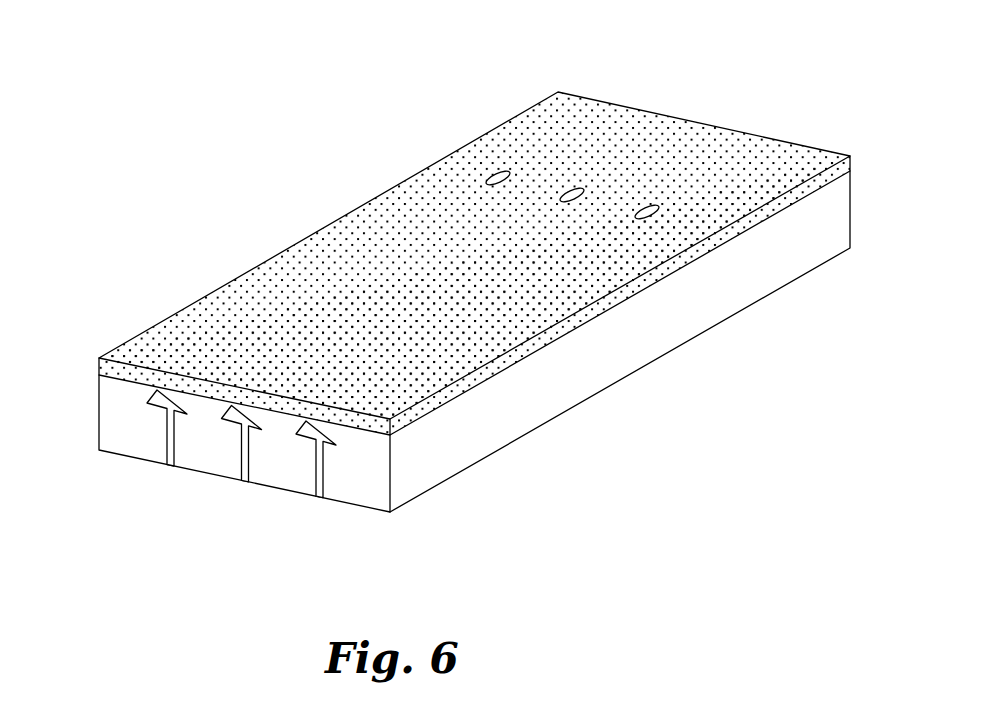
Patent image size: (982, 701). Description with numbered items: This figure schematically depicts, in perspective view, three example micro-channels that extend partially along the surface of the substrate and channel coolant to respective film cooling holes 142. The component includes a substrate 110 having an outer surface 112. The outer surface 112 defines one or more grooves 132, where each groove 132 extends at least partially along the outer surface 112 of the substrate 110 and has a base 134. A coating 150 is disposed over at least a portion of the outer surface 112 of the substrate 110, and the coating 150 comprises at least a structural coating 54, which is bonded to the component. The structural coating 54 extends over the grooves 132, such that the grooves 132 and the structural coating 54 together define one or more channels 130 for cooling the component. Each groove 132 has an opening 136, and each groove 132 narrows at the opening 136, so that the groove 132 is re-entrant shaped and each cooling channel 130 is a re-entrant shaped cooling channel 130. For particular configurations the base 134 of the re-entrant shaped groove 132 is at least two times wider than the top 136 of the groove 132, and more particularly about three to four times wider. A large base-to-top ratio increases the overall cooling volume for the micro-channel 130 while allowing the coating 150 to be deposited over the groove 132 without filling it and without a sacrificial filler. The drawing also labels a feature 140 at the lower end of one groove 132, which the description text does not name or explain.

The substrate 110 is at (487, 354).
The outer surface 112 is at (403, 430).
The coating 150 is at (655, 127).
The structural coating 54 is at (474, 233).
The film cooling holes 142 is at (645, 210).
The cooling channel 130 is at (185, 450).
The groove 132 is at (302, 437).
The opening 136 is at (157, 393).
The slot 140 is at (318, 487).
The base 134 is at (333, 448).